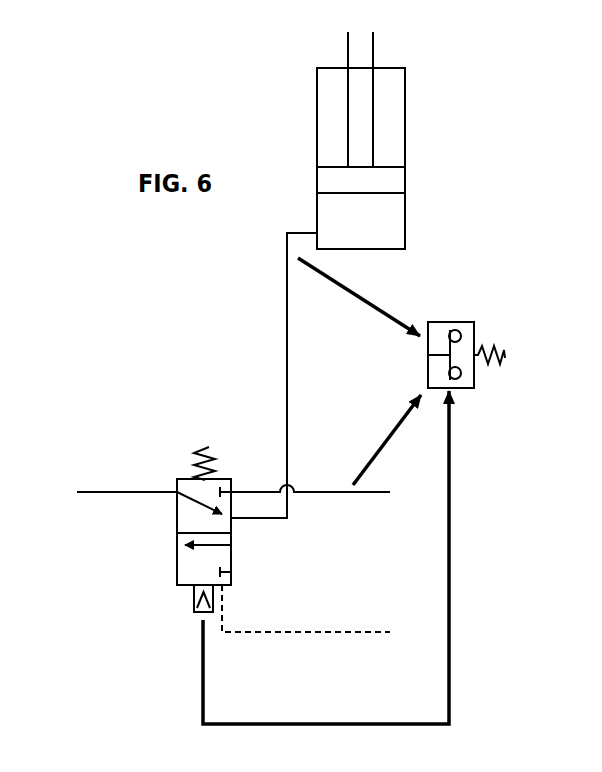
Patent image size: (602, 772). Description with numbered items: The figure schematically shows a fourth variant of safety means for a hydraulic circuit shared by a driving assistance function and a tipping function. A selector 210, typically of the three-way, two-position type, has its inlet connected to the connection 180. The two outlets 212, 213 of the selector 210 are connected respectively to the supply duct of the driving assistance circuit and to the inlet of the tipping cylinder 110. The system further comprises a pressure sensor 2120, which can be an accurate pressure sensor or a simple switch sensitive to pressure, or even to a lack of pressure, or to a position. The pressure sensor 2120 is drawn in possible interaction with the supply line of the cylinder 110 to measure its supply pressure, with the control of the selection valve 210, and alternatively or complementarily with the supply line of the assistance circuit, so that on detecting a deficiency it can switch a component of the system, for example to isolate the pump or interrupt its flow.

The tipping cylinder 110 is at (290, 152).
The connection 180 is at (77, 492).
The selector 210 is at (156, 542).
The outlet 212 is at (250, 490).
The outlet 213 is at (251, 521).
The pressure sensor 2120 is at (485, 305).